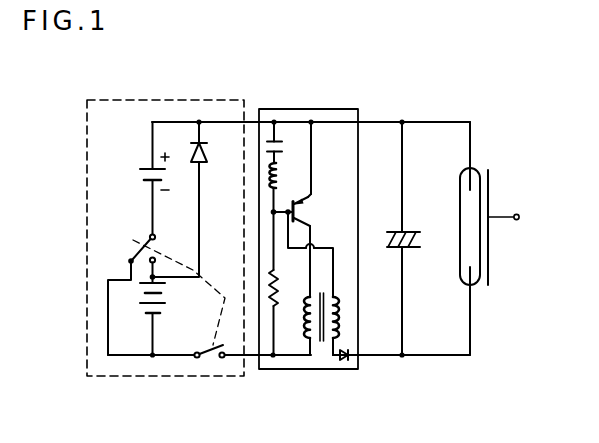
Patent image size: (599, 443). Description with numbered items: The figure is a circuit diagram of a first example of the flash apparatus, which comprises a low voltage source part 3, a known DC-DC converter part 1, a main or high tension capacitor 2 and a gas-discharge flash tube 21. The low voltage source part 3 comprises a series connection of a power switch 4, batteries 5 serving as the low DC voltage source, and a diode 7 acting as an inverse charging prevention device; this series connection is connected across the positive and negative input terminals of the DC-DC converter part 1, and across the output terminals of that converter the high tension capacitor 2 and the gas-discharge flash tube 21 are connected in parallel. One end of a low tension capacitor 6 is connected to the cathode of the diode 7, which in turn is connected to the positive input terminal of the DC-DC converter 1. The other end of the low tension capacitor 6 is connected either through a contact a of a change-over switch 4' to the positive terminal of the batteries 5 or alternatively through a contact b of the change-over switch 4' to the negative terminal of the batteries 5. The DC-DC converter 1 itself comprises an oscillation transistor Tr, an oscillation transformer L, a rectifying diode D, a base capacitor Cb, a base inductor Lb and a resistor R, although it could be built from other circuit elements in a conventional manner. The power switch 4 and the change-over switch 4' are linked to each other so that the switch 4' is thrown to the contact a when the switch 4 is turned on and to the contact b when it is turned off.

The DC-DC converter part 1 is at (337, 109).
The high tension capacitor 2 is at (387, 235).
The low voltage source part 3 is at (240, 90).
The power switch 4 is at (209, 389).
The change-over switch 4' is at (166, 268).
The batteries 5 is at (168, 298).
The low tension capacitor 6 is at (141, 168).
The diode 7 is at (208, 152).
The gas-discharge flash tube 21 is at (474, 170).
The contact a is at (174, 269).
The contact b is at (121, 305).
The base capacitor Cb is at (281, 146).
The base inductor Lb is at (285, 174).
The oscillation transistor Tr is at (305, 212).
The resistor R is at (283, 293).
The oscillation transformer L is at (322, 350).
The rectifying diode D is at (345, 363).